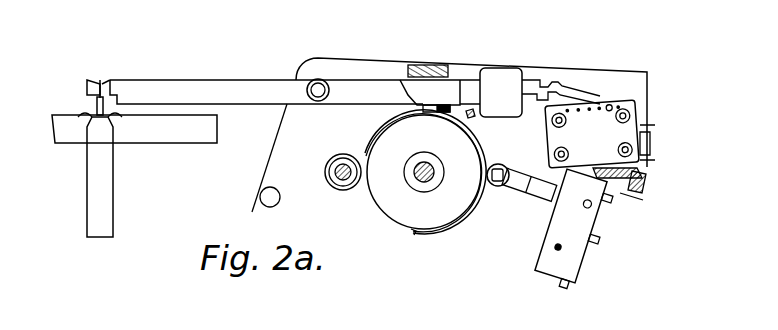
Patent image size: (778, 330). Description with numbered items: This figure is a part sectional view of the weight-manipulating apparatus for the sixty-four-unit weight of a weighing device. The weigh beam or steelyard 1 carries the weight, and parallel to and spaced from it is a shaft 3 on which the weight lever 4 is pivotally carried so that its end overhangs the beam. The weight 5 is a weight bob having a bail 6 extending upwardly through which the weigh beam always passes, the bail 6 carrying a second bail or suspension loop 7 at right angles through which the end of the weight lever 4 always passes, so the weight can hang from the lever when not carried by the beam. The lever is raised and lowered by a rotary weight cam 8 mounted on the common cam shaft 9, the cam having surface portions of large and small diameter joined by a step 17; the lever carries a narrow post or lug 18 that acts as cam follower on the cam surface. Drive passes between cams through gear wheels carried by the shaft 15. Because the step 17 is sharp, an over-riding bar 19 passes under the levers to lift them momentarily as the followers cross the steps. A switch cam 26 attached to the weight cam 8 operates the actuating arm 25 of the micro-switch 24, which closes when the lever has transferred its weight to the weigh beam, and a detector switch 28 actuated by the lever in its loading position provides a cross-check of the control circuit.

The weigh beam or steelyard 1 is at (80, 138).
The shaft 3 is at (322, 80).
The weight lever 4 is at (238, 93).
The weight 5 is at (103, 190).
The bail 6 is at (115, 130).
The second bail or suspension loop 7 is at (101, 80).
The rotary weight cam 8 is at (395, 155).
The cam shaft 9 is at (415, 178).
The shaft 15 is at (330, 166).
The step 17 is at (449, 107).
The post or lug 18 is at (400, 79).
The over-riding bar 19 is at (474, 114).
The micro-switch 24 is at (587, 238).
The actuating arm 25 is at (515, 186).
The switch cam 26 is at (484, 192).
The detector switch 28 is at (612, 144).